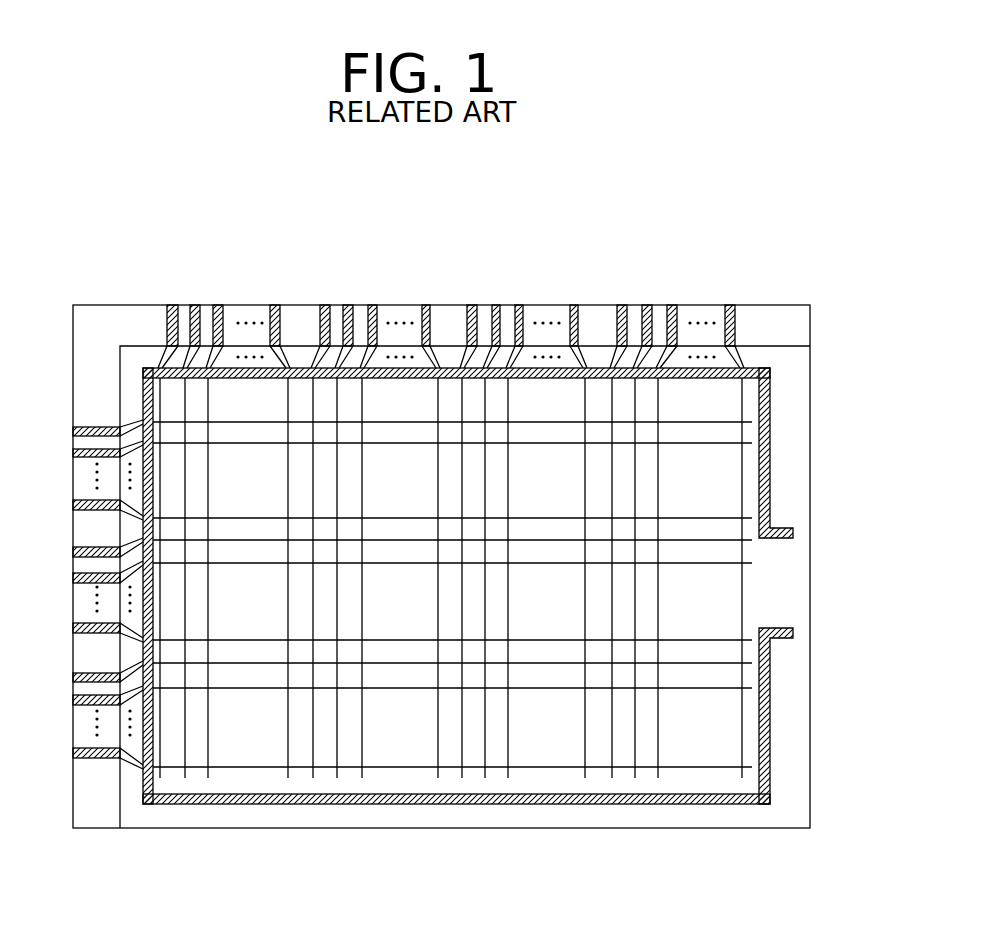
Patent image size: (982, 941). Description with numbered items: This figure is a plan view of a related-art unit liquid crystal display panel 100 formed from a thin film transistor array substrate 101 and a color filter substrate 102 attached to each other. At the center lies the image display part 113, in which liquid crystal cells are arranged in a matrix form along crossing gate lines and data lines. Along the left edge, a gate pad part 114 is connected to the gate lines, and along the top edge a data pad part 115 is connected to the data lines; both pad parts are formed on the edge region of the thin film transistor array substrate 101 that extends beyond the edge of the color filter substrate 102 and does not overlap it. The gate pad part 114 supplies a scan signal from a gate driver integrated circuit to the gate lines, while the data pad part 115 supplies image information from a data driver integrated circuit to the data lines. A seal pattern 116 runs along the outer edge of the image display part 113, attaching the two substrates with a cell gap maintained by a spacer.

The liquid crystal display panel 100 is at (102, 290).
The thin film transistor array substrate 101 is at (797, 328).
The color filter substrate 102 is at (797, 390).
The image display part 113 is at (418, 490).
The gate pad part 114 is at (66, 428).
The data pad part 115 is at (735, 294).
The seal pattern 116 is at (770, 453).